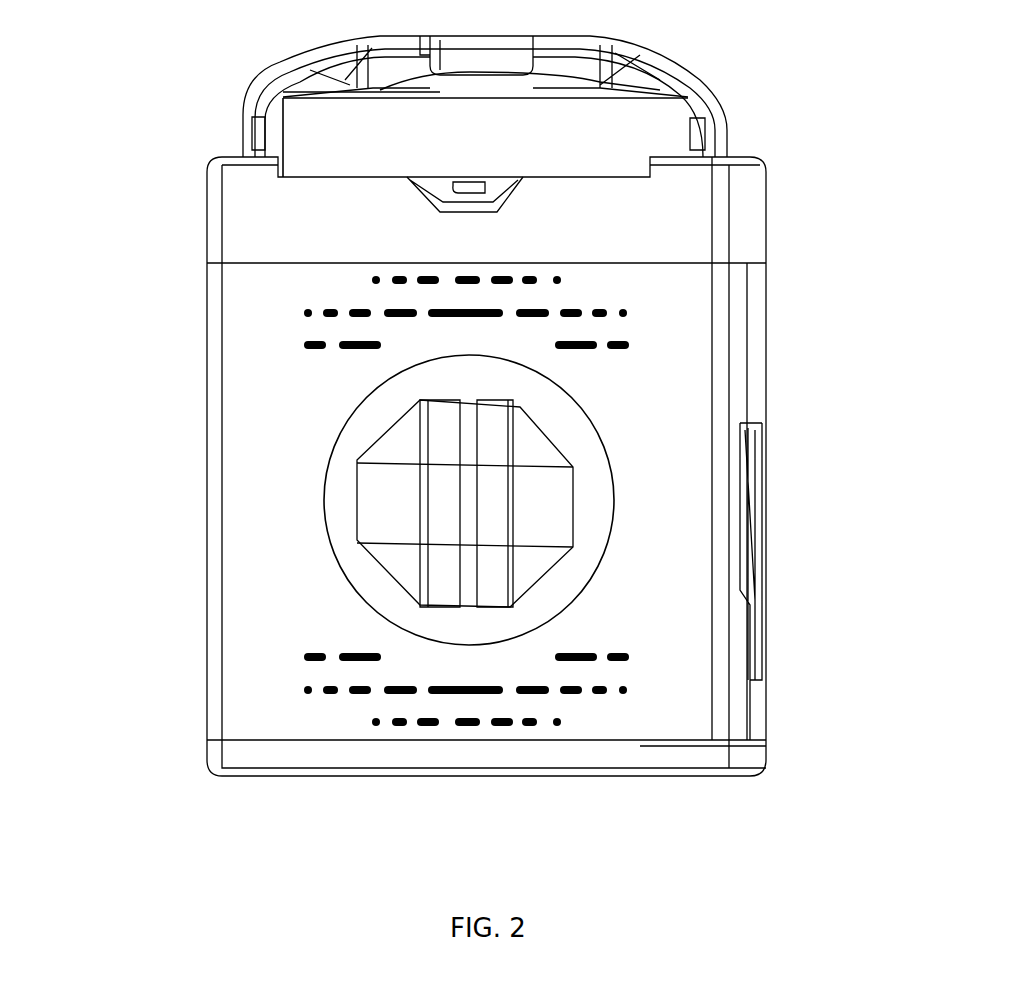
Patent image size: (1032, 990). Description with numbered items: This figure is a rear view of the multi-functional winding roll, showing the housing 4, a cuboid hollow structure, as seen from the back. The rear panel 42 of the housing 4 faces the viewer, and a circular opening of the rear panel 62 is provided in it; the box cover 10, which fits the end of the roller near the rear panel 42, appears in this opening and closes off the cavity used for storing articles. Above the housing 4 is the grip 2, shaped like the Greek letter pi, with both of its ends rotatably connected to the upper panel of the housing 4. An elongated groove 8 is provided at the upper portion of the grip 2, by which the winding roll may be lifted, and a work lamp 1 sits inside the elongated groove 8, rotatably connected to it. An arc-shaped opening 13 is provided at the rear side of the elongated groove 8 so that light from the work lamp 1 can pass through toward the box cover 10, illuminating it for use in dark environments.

The work lamp 1 is at (490, 57).
The grip 2 is at (713, 130).
The housing 4 is at (253, 345).
The elongated groove 8 is at (440, 40).
The box cover 10 is at (478, 448).
The arc-shaped opening 13 is at (445, 58).
The rear panel 42 is at (285, 452).
The circular opening of the rear panel 62 is at (340, 573).